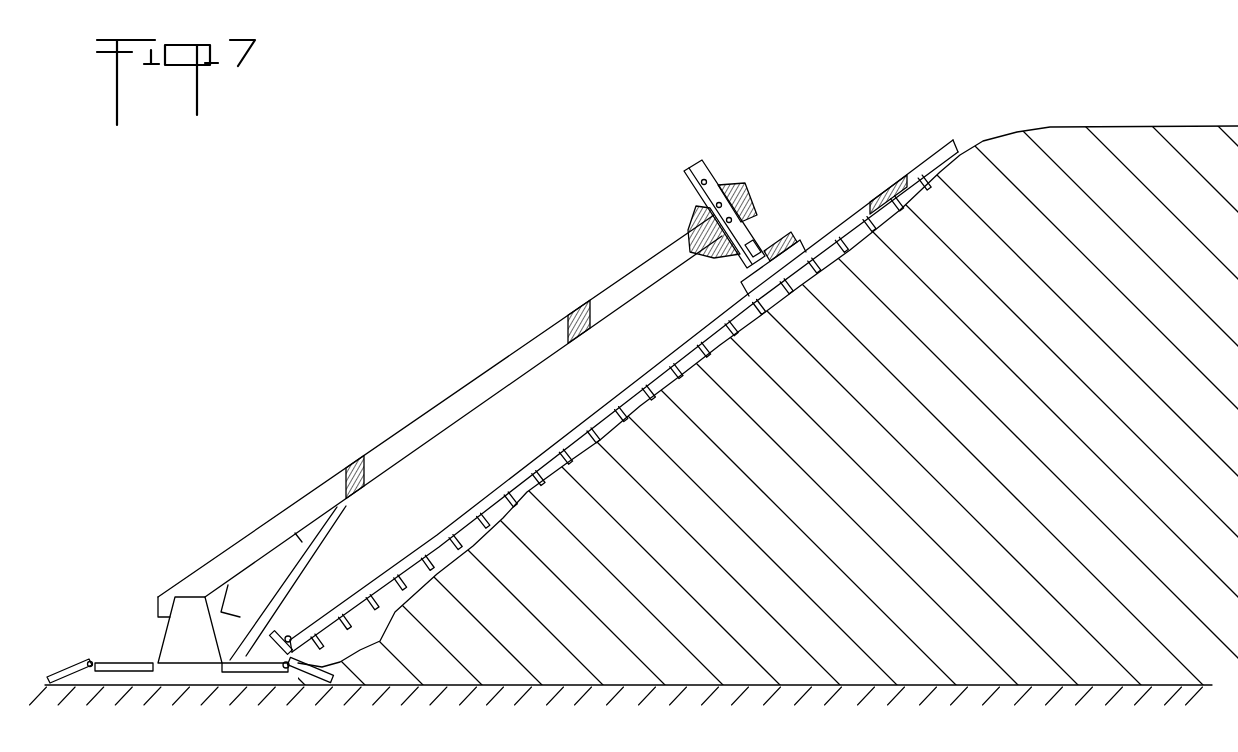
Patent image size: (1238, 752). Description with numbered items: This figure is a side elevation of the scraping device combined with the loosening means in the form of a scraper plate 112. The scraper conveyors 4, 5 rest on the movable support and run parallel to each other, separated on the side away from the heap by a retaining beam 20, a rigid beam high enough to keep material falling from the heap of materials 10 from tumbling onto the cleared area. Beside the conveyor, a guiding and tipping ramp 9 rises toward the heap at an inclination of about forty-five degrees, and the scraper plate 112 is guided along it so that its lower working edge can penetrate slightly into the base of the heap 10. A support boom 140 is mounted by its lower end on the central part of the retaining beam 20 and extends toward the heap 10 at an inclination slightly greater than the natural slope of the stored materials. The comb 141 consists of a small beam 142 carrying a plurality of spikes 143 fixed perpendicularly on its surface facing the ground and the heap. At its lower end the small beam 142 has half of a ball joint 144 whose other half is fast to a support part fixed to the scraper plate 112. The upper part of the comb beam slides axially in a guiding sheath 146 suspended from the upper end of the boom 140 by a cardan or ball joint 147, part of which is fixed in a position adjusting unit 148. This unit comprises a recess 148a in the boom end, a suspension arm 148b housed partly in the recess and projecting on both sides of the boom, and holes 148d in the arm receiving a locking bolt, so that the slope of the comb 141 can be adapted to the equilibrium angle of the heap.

The scraper conveyor 4 is at (110, 663).
The scraper conveyor 5 is at (250, 672).
The guiding and tipping ramp 9 is at (302, 686).
The heap of materials 10 is at (1008, 465).
The retaining beam 20 is at (190, 625).
The scraper plate 112 is at (357, 656).
The support boom 140 is at (487, 380).
The comb 141 is at (614, 444).
The small beam 142 is at (624, 396).
The spikes 143 is at (728, 350).
The ball joint 144 is at (290, 635).
The guiding sheath 146 is at (742, 287).
The ball joint 147 is at (776, 247).
The position adjusting unit 148 is at (705, 174).
The recess 148a is at (690, 227).
The suspension arm 148b is at (692, 166).
The holes 148d is at (726, 167).